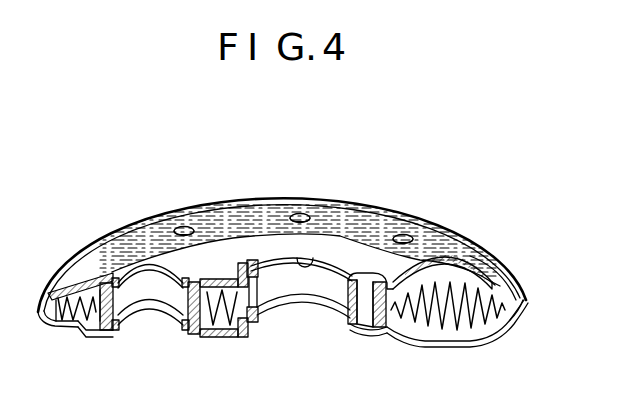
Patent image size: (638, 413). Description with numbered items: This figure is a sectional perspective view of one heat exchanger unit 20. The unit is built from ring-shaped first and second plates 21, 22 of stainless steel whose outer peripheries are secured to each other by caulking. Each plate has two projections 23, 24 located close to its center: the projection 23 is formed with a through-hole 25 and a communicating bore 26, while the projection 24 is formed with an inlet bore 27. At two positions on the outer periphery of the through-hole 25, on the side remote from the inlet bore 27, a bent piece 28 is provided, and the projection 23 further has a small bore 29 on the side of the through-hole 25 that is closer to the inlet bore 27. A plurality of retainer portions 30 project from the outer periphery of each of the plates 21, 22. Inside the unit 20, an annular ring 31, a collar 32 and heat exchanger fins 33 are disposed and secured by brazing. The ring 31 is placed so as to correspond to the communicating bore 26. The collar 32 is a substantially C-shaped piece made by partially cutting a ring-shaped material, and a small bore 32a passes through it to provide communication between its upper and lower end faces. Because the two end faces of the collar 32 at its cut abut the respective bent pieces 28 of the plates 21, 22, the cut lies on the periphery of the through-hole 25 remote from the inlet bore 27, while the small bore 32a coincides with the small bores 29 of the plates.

The heat exchanger unit 20 is at (513, 282).
The first plate 21 is at (73, 270).
The second plate 22 is at (81, 338).
The projection 23 is at (241, 250).
The projection 24 is at (446, 265).
The through-hole 25 is at (310, 260).
The communicating bore 26 is at (138, 272).
The inlet bore 27 is at (481, 281).
The bent piece 28 is at (247, 322).
The small bore 29 is at (382, 272).
The retainer portion 30 is at (184, 226).
The annular ring 31 is at (192, 322).
The collar 32 is at (304, 295).
The small bore 32a is at (368, 318).
The heat exchanger fins 33 is at (452, 318).